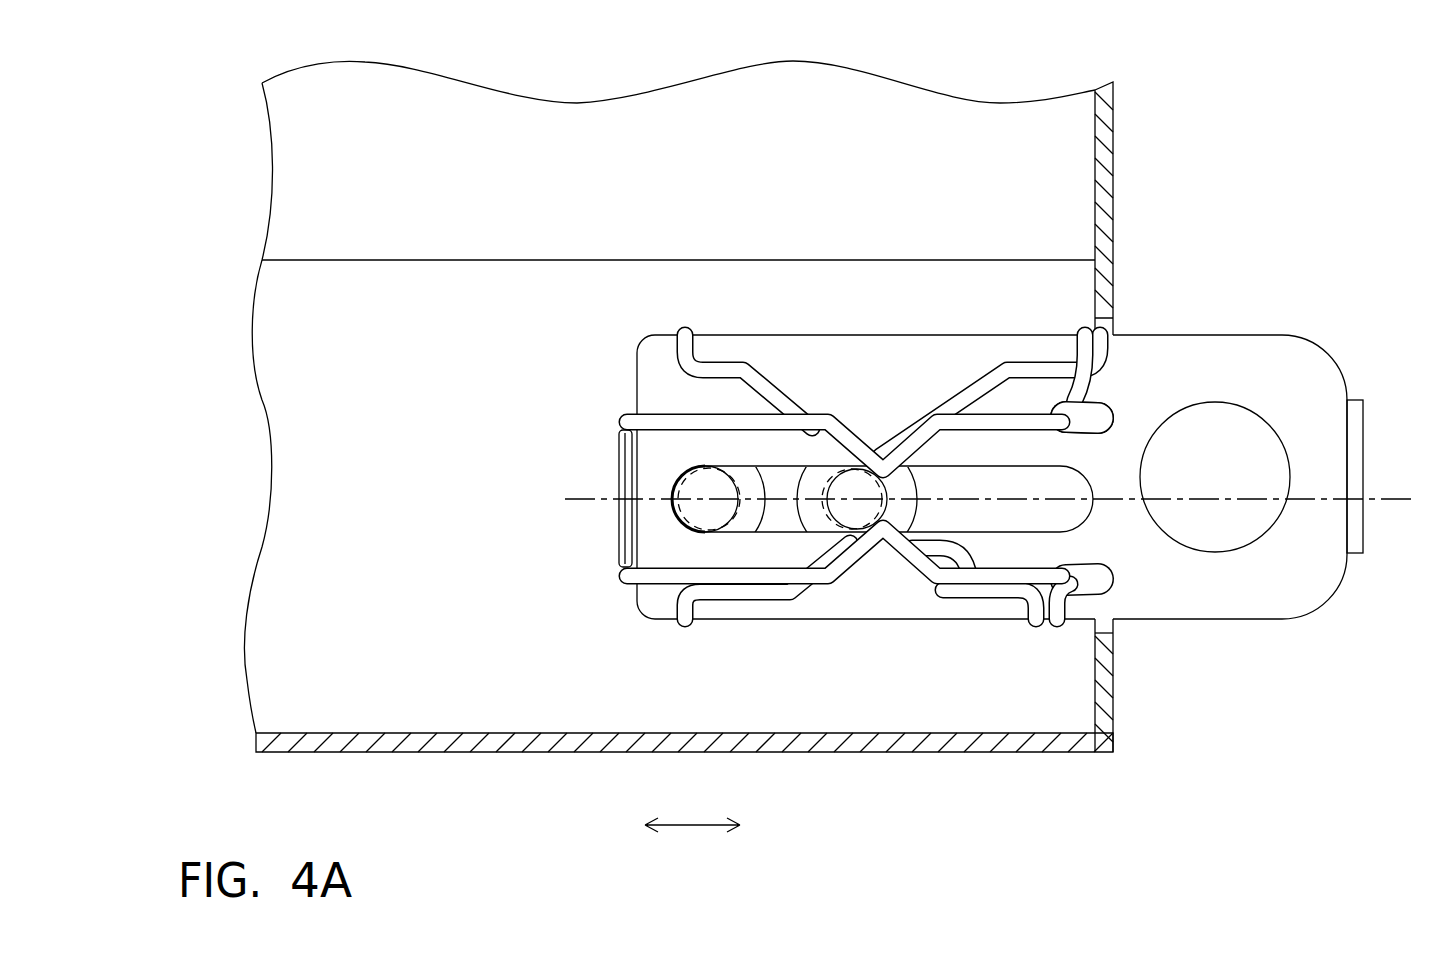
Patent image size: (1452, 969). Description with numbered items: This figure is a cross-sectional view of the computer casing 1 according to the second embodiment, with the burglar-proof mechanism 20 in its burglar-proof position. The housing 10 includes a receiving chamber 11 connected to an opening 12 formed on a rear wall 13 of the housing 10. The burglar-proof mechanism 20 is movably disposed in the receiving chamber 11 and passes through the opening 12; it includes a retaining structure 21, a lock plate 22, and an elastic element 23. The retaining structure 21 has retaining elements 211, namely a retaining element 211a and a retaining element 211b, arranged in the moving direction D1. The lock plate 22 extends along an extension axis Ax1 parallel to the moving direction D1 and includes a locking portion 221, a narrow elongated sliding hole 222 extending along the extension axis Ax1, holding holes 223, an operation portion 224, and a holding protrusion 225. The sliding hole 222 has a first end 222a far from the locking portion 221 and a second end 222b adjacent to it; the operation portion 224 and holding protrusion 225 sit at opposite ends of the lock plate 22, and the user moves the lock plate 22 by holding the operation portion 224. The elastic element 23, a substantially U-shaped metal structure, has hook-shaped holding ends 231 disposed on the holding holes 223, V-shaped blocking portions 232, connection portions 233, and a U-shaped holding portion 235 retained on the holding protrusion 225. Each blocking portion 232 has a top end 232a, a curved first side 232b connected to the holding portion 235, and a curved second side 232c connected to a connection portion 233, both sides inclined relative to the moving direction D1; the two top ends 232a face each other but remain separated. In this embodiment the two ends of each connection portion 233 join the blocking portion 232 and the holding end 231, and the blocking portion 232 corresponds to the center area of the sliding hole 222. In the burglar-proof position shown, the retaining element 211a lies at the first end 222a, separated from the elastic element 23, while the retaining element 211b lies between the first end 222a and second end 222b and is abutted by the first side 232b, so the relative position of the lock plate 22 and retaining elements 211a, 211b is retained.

The computer casing 1 is at (1362, 100).
The housing 10 is at (1120, 107).
The receiving chamber 11 is at (336, 314).
The opening 12 is at (1103, 627).
The rear wall 13 is at (1103, 673).
The burglar-proof mechanism 20 is at (1297, 320).
The retaining structure 21 is at (465, 290).
The lock plate 22 is at (643, 340).
The elastic element 23 is at (622, 415).
The retaining elements 211 is at (118, 60).
The retaining element 211a is at (690, 467).
The retaining element 211b is at (830, 470).
The locking portion 221 is at (1265, 417).
The sliding hole 222 is at (1045, 480).
The first end 222a is at (672, 490).
The second end 222b is at (1090, 522).
The holding holes 223 is at (1087, 413).
The operation portion 224 is at (1355, 417).
The holding protrusion 225 is at (620, 525).
The holding ends 231 is at (1082, 418).
The blocking portions 232 is at (118, 172).
The top ends 232a is at (885, 838).
The first sides 232b is at (830, 793).
The second sides 232c is at (930, 793).
The connection portions 233 is at (962, 417).
The holding portion 235 is at (620, 447).
The extension axis Ax1 is at (1392, 500).
The moving direction D1 is at (692, 806).